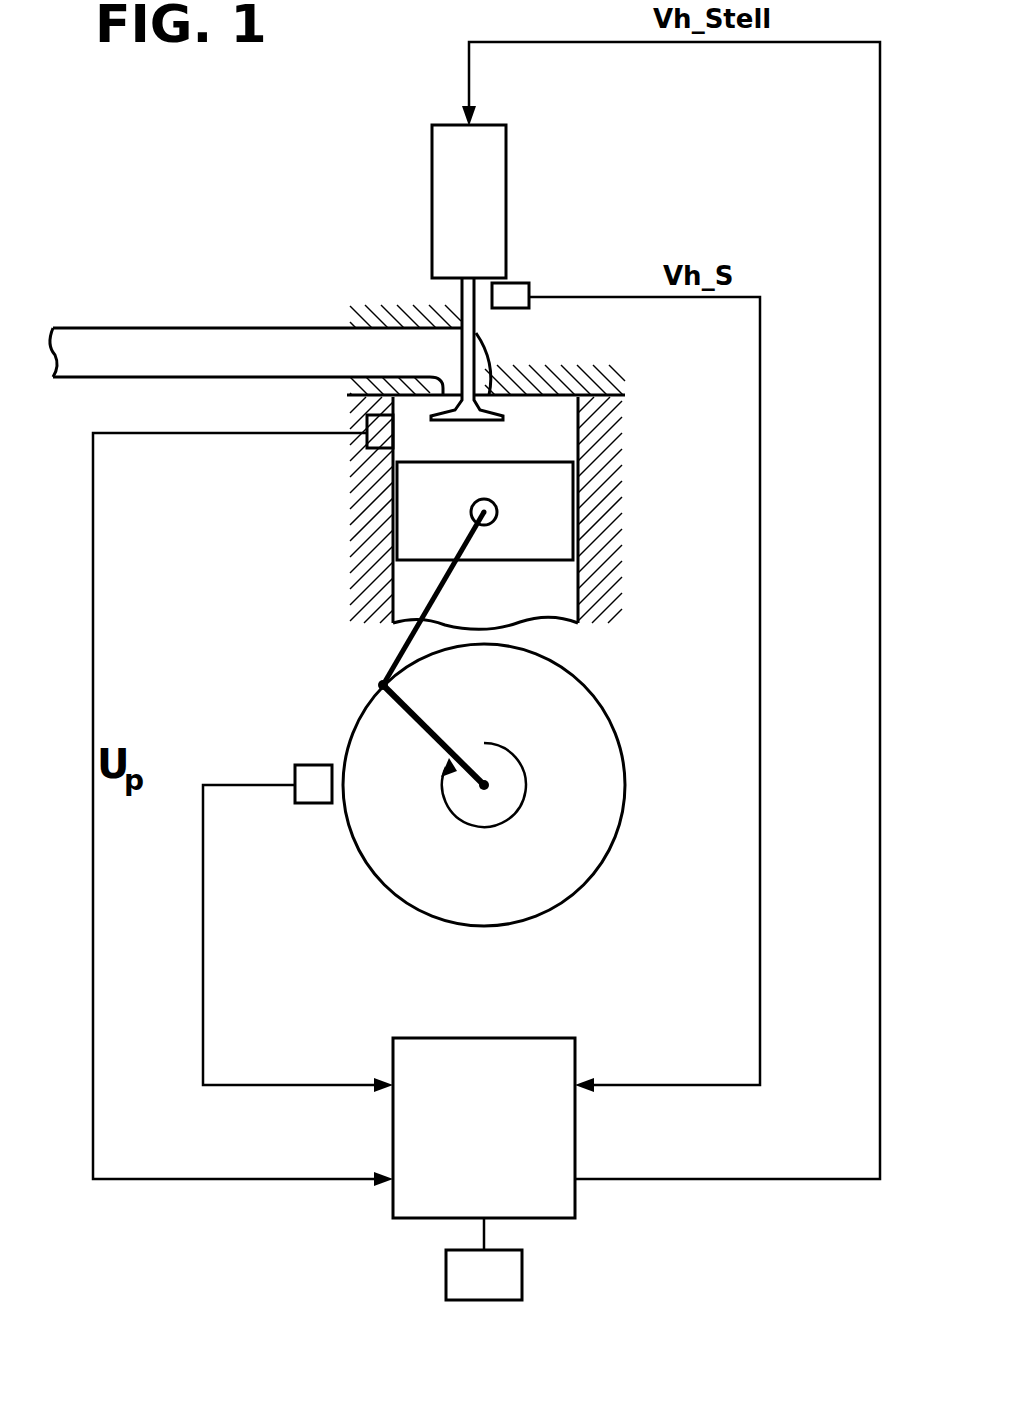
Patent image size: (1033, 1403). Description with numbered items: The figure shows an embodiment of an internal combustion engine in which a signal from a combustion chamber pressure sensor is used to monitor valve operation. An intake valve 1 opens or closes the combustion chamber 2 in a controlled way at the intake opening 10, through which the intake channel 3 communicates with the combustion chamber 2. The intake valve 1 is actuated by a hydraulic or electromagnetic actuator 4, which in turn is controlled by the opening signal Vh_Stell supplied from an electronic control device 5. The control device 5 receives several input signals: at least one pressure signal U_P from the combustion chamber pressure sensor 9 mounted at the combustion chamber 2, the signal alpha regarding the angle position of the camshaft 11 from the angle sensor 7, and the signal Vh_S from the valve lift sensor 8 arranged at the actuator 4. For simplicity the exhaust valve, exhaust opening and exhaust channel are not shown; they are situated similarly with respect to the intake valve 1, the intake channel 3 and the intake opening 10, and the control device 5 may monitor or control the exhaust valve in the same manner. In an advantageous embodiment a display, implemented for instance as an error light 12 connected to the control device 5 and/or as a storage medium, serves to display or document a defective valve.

The intake valve 1 is at (463, 420).
The combustion chamber 2 is at (565, 435).
The intake channel 3 is at (217, 345).
The actuator 4 is at (506, 158).
The electronic control device 5 is at (545, 1038).
The angle sensor 7 is at (305, 765).
The valve lift sensor 8 is at (520, 283).
The combustion chamber pressure sensor 9 is at (367, 440).
The intake opening 10 is at (490, 385).
The camshaft 11 is at (570, 900).
The error light 12 is at (522, 1280).